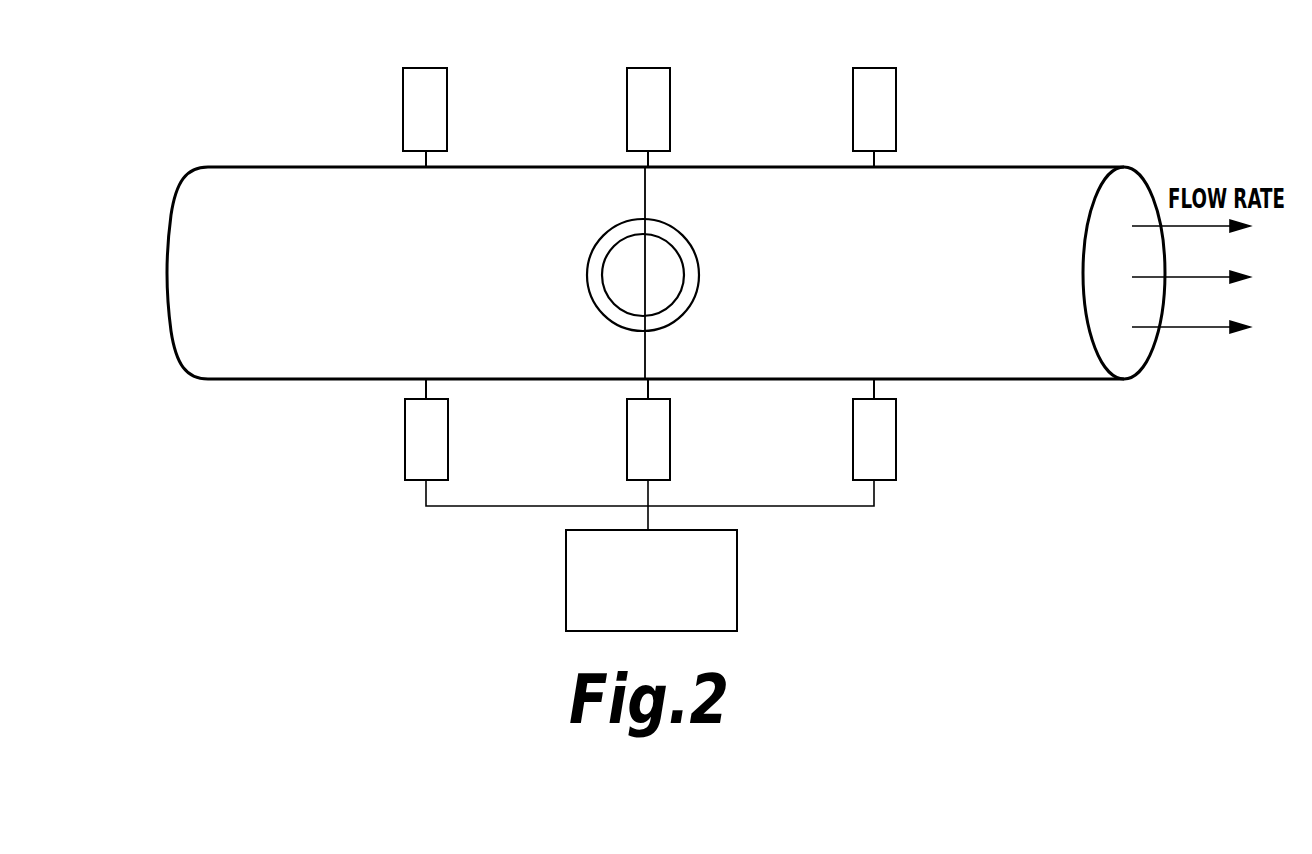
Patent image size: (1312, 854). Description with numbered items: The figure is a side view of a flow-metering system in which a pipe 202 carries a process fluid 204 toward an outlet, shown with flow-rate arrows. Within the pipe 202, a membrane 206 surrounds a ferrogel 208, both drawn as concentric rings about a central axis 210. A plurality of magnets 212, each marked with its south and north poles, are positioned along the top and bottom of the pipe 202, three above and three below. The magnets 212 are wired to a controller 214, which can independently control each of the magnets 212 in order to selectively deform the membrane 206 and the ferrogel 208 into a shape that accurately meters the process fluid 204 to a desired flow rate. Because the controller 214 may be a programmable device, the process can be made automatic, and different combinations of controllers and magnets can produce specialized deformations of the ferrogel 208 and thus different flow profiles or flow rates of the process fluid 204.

The pipe 202 is at (295, 167).
The process fluid 204 is at (958, 299).
The membrane 206 is at (699, 273).
The ferrogel 208 is at (660, 245).
The center axis 210 is at (642, 285).
The magnets 212 is at (447, 108).
The controller 214 is at (673, 592).